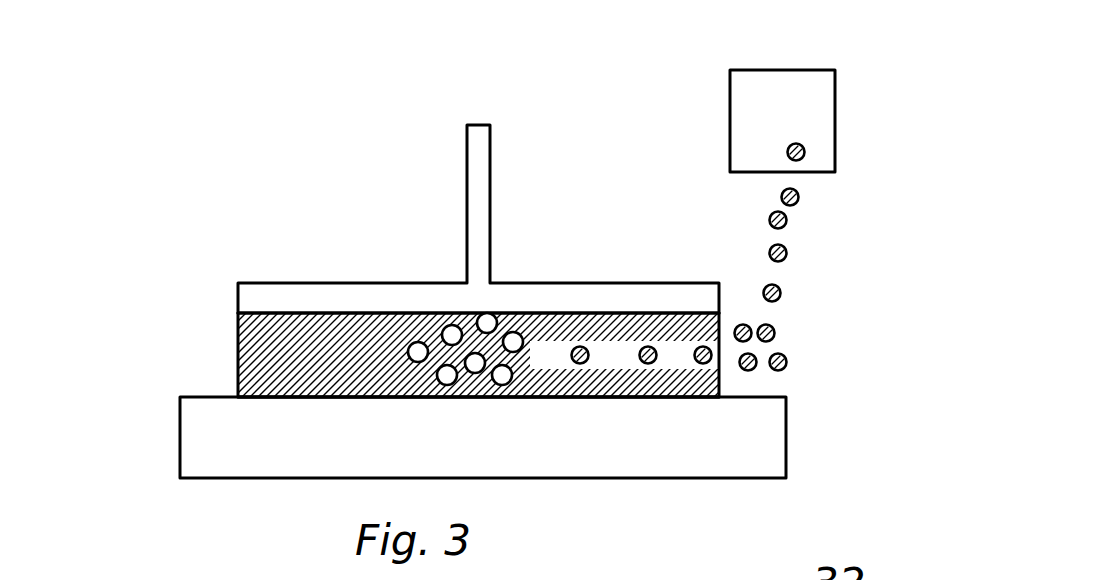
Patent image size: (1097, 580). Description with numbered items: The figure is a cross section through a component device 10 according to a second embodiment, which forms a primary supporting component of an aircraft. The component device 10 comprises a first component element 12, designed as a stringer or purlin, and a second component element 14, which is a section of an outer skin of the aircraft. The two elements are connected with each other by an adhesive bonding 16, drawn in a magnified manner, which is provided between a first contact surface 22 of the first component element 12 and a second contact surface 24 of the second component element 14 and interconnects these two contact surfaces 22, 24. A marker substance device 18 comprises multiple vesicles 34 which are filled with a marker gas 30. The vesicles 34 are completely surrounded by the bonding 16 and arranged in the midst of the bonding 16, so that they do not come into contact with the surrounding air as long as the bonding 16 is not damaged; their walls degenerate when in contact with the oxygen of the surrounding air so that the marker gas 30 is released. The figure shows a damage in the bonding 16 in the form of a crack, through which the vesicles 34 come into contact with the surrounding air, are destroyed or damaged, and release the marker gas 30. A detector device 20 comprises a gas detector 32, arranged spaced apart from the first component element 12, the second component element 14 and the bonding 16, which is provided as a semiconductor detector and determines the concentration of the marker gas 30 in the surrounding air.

The component device 10 is at (285, 88).
The first component element 12 is at (248, 290).
The second component element 14 is at (243, 468).
The bonding 16 is at (260, 362).
The marker substance device 18 is at (463, 321).
The detector device 20 is at (741, 60).
The first contact surface 22 is at (256, 317).
The second contact surface 24 is at (265, 392).
The marker gas 30 is at (414, 352).
The gas detector 32 is at (757, 93).
The vesicles 34 is at (418, 341).